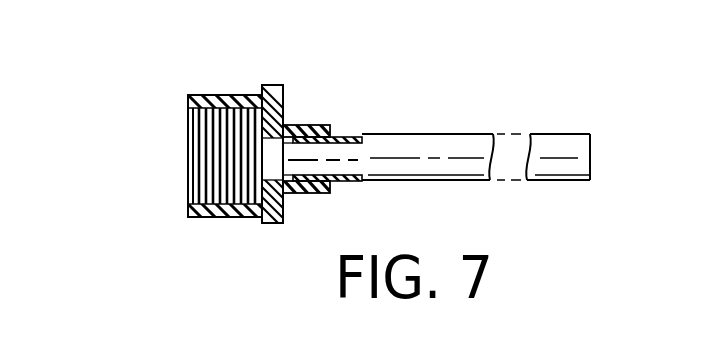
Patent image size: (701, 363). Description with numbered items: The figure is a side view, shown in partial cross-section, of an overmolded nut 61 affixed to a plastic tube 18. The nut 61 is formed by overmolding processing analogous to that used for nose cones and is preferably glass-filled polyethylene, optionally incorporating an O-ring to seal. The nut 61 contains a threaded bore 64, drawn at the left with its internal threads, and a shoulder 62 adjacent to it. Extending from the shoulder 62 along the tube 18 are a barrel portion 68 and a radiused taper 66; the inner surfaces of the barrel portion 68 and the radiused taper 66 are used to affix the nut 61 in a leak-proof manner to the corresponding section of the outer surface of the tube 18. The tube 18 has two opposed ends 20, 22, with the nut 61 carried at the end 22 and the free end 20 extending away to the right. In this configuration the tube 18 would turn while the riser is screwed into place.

The overmolded nut 61 is at (213, 93).
The shoulder 62 is at (275, 87).
The threaded bore 64 is at (190, 141).
The end of tube 22 is at (262, 172).
The barrel portion 68 is at (312, 127).
The radiused taper 66 is at (332, 136).
The tube 18 is at (424, 133).
The end of tube 20 is at (593, 166).